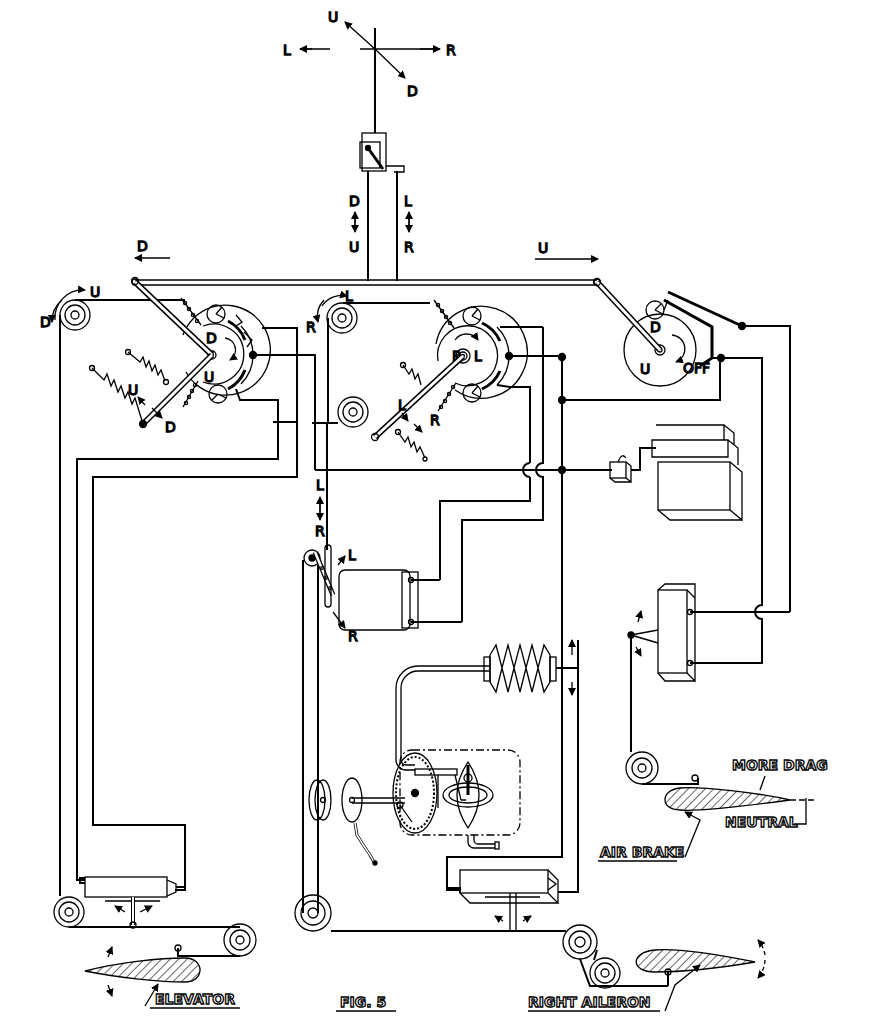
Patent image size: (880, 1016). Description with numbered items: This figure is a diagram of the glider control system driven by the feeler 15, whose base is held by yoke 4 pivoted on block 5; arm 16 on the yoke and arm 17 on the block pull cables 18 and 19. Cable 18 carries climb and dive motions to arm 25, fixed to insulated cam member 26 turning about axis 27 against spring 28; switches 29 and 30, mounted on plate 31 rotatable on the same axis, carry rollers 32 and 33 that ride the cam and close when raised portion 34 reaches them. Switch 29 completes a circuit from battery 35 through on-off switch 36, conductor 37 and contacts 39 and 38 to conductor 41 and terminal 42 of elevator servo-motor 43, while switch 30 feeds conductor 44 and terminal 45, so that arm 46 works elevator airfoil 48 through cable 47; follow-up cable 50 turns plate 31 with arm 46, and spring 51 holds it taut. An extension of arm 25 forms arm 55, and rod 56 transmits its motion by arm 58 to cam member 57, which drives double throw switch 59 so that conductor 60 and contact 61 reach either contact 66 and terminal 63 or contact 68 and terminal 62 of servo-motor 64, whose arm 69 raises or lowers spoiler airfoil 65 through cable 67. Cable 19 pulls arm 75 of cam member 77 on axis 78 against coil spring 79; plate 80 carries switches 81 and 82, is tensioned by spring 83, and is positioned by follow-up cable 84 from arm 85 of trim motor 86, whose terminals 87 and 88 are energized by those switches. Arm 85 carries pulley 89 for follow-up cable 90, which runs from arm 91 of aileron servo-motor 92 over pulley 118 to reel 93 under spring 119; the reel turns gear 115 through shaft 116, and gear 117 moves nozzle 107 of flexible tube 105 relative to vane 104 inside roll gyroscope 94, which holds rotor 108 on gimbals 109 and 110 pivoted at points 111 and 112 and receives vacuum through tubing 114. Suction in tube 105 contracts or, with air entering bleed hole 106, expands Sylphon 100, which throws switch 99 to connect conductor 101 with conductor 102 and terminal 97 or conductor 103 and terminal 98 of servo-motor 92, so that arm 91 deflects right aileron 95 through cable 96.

The yoke 4 is at (386, 141).
The rectangular block 5 is at (362, 168).
The feeler 15 is at (372, 97).
The vertically extending arm 16 is at (360, 158).
The arm 17 is at (396, 172).
The cable 18 is at (365, 269).
The cable 19 is at (399, 273).
The arm 25 is at (140, 426).
The insulated cam member 26 is at (182, 355).
The axis 27 is at (198, 346).
The spring 28 is at (130, 410).
The electrical switch 29 is at (255, 343).
The electrical switch 30 is at (240, 402).
The plate 31 is at (185, 296).
The roller 32 is at (212, 305).
The roller 33 is at (214, 403).
The raised portion 34 is at (255, 380).
The battery 35 is at (697, 472).
The manual on-off switch 36 is at (619, 482).
The conductor 37 is at (480, 472).
The contact 38 is at (236, 316).
The contact 39 is at (252, 326).
The conductor 41 is at (195, 609).
The terminal 42 is at (186, 897).
The servo-motor 43 is at (151, 876).
The conductor 44 is at (177, 634).
The terminal 45 is at (84, 877).
The arm 46 is at (147, 940).
The cable 47 is at (222, 925).
The elevator airfoil 48 is at (98, 976).
The cable 50 is at (107, 598).
The spring 51 is at (138, 371).
The arm 55 is at (165, 312).
The rod 56 is at (272, 283).
The cam member 57 is at (624, 356).
The arm 58 is at (617, 306).
The double throw switch 59 is at (708, 302).
The conductor 60 is at (640, 400).
The contact 61 is at (722, 310).
The terminal 62 is at (714, 664).
The terminal 63 is at (739, 614).
The servo-motor 64 is at (678, 684).
The air-brake or spoiler airfoil 65 is at (665, 799).
The contact 66 is at (683, 300).
The cable 67 is at (634, 738).
The contact 68 is at (660, 300).
The servo-motor arm 69 is at (630, 635).
The arm 75 is at (395, 430).
The switch-operating cam member 77 is at (440, 342).
The axis 78 is at (455, 356).
The coil spring 79 is at (406, 447).
The plate 80 is at (503, 410).
The switch 81 is at (486, 308).
The switch 82 is at (482, 404).
The spring 83 is at (447, 359).
The follow-up cable 84 is at (440, 315).
The arm 85 is at (329, 607).
The trim motor 86 is at (374, 600).
The terminal 87 is at (434, 622).
The terminal 88 is at (432, 594).
The free-turning pulley 89 is at (305, 556).
The follow-up cable 90 is at (300, 732).
The arm 91 is at (511, 926).
The aileron servo-motor 92 is at (560, 894).
The reel 93 is at (336, 782).
The roll gyroscope 94 is at (492, 760).
The right aileron 95 is at (690, 948).
The cable 96 is at (574, 958).
The terminal 97 is at (552, 880).
The terminal 98 is at (464, 895).
The Sylphon actuated switch 99 is at (582, 690).
The Sylphon 100 is at (552, 637).
The conductor 101 is at (565, 606).
The conductor 102 is at (581, 766).
The conductor 103 is at (577, 718).
The vane 104 is at (440, 802).
The tube 105 is at (446, 668).
The bleed hole 106 is at (510, 690).
The nozzle 107 is at (452, 770).
The rotor 108 is at (483, 822).
The gimbal 109 is at (478, 782).
The outer gimbal 110 is at (492, 800).
The pivot point 111 is at (490, 800).
The pivot point 112 is at (439, 780).
The tubing 114 is at (499, 848).
The gear 115 is at (398, 808).
The shaft 116 is at (378, 797).
The gear 117 is at (412, 824).
The free turning pulley 118 is at (333, 912).
The spring 119 is at (359, 845).